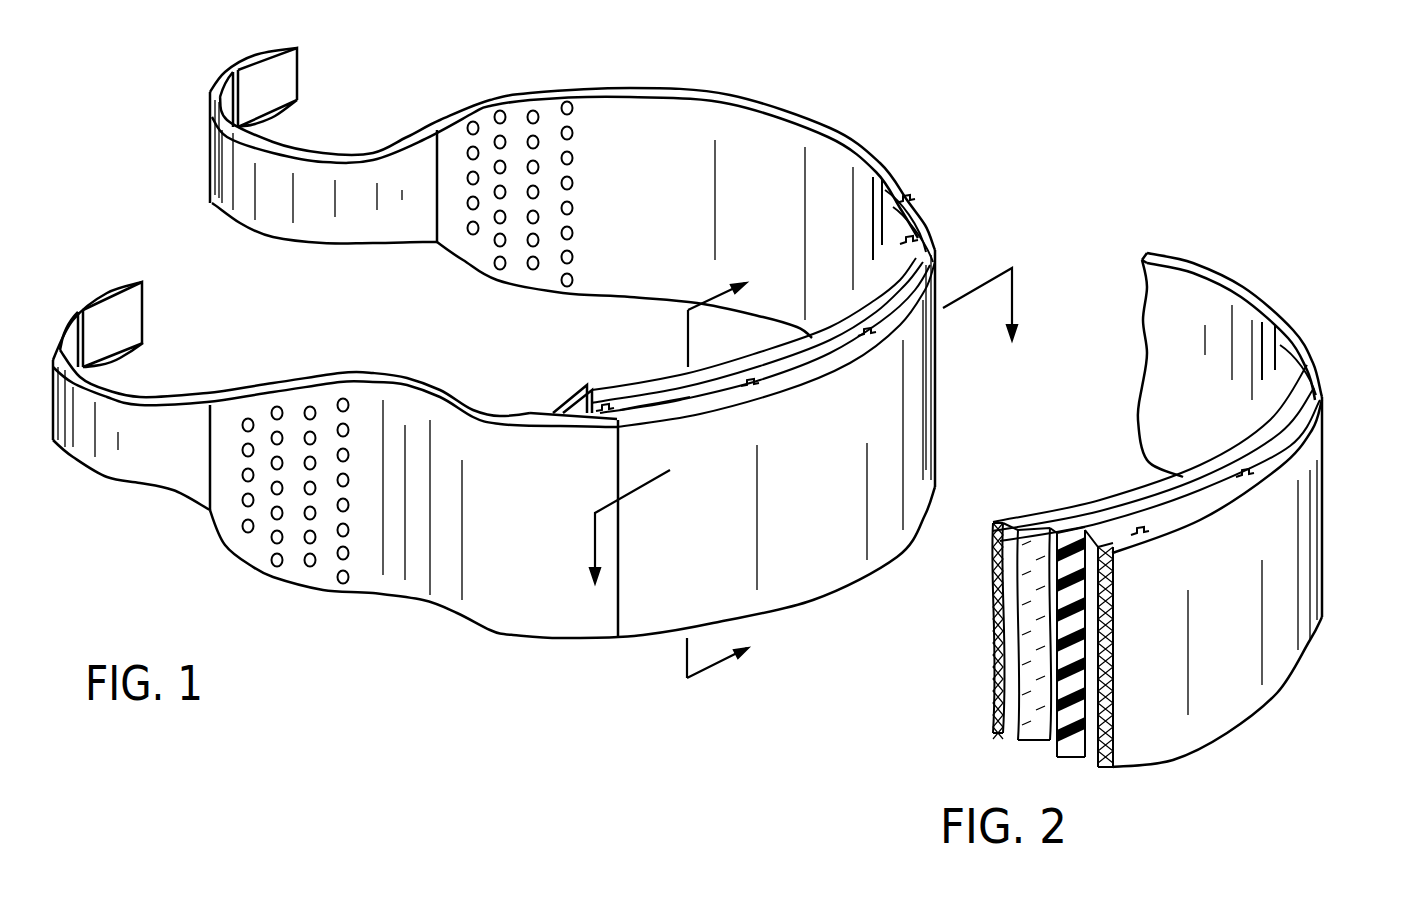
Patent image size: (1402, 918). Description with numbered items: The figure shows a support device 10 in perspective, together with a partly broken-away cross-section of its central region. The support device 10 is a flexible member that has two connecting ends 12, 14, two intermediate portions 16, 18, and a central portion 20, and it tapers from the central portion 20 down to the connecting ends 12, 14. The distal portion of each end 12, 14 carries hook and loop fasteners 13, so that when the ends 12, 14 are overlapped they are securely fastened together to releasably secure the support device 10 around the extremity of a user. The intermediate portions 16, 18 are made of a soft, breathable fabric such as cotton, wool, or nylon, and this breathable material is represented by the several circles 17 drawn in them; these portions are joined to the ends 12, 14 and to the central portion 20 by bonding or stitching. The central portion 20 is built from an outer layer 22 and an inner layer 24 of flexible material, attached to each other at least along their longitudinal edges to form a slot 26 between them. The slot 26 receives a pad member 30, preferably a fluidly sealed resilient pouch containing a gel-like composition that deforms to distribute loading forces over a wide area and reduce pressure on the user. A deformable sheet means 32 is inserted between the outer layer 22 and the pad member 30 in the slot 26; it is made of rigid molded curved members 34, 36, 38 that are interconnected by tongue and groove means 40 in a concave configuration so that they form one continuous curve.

In FIG. 1, the support device 10 is at (549, 367).
In FIG. 1, the connecting end 12 is at (313, 150).
In FIG. 1, the hook and loop fasteners 13 is at (288, 80).
In FIG. 1, the connecting end 14 is at (137, 457).
In FIG. 1, the intermediate portion 16 is at (667, 117).
In FIG. 2, the intermediate portion 16 is at (1207, 300).
In FIG. 1, the circles 17 is at (567, 105).
In FIG. 1, the intermediate portion 18 is at (412, 575).
In FIG. 1, the central portion 20 is at (572, 474).
In FIG. 2, the central portion 20 is at (1243, 586).
In FIG. 1, the outer layer 22 is at (643, 635).
In FIG. 2, the outer layer 22 is at (1210, 720).
In FIG. 1, the inner layer 24 is at (567, 397).
In FIG. 2, the inner layer 24 is at (993, 517).
In FIG. 1, the slot 26 is at (903, 200).
In FIG. 1, the pad member 30 is at (803, 302).
In FIG. 2, the pad member 30 is at (1179, 555).
In FIG. 1, the deformable sheet means 32 is at (920, 268).
In FIG. 2, the deformable sheet means 32 is at (1303, 400).
In FIG. 1, the curved member 34 is at (890, 310).
In FIG. 2, the curved member 34 is at (1290, 437).
In FIG. 1, the curved member 36 is at (812, 360).
In FIG. 2, the curved member 36 is at (1207, 507).
In FIG. 1, the curved member 38 is at (652, 400).
In FIG. 2, the curved member 38 is at (1103, 522).
In FIG. 1, the tongue and groove means 40 is at (760, 407).
In FIG. 2, the tongue and groove means 40 is at (1250, 470).